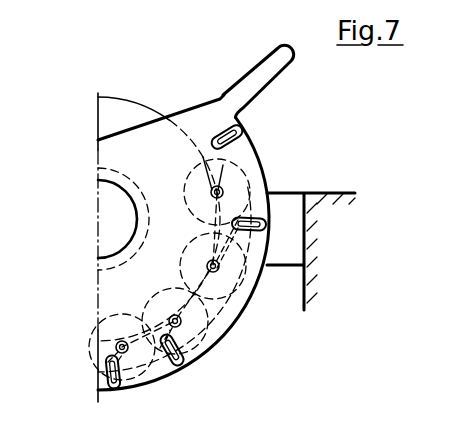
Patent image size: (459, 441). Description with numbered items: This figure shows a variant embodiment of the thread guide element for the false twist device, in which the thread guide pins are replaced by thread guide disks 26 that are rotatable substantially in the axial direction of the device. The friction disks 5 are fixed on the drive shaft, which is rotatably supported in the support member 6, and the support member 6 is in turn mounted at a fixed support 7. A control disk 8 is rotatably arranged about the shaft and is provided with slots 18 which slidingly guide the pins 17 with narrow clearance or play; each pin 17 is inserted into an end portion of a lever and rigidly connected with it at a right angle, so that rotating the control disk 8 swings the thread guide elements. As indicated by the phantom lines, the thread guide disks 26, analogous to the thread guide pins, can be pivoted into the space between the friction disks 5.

The friction disk 5 is at (122, 116).
The control disk 8 is at (206, 100).
The pin 17 is at (243, 128).
The slot 18 is at (250, 148).
The support member 6 is at (288, 208).
The fixed support 7 is at (332, 230).
The thread guide disk 26 is at (112, 315).